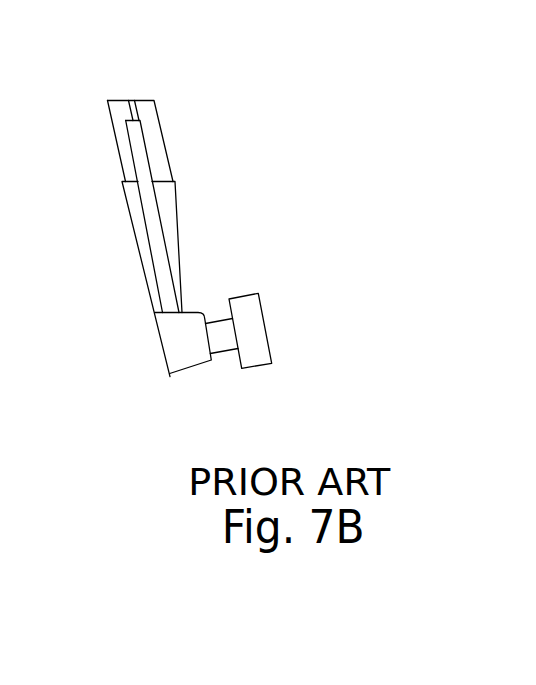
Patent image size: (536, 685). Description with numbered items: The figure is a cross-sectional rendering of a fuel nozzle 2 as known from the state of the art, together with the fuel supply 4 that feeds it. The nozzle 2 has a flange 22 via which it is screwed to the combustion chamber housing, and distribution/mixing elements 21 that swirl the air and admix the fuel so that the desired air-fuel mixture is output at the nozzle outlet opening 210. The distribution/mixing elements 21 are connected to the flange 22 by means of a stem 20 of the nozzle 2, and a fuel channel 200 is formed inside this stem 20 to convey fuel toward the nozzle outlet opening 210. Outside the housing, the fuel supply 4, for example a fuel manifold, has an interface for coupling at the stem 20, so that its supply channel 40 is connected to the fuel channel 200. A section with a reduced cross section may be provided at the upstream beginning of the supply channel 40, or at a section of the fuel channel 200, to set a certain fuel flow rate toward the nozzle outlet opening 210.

The nozzle 2 is at (140, 258).
The fuel supply 4 is at (158, 99).
The stem 20 is at (183, 238).
The distribution/mixing elements 21 is at (196, 357).
The flange 22 is at (117, 132).
The supply channel 40 is at (130, 101).
The fuel channel 200 is at (161, 212).
The nozzle outlet opening 210 is at (266, 318).